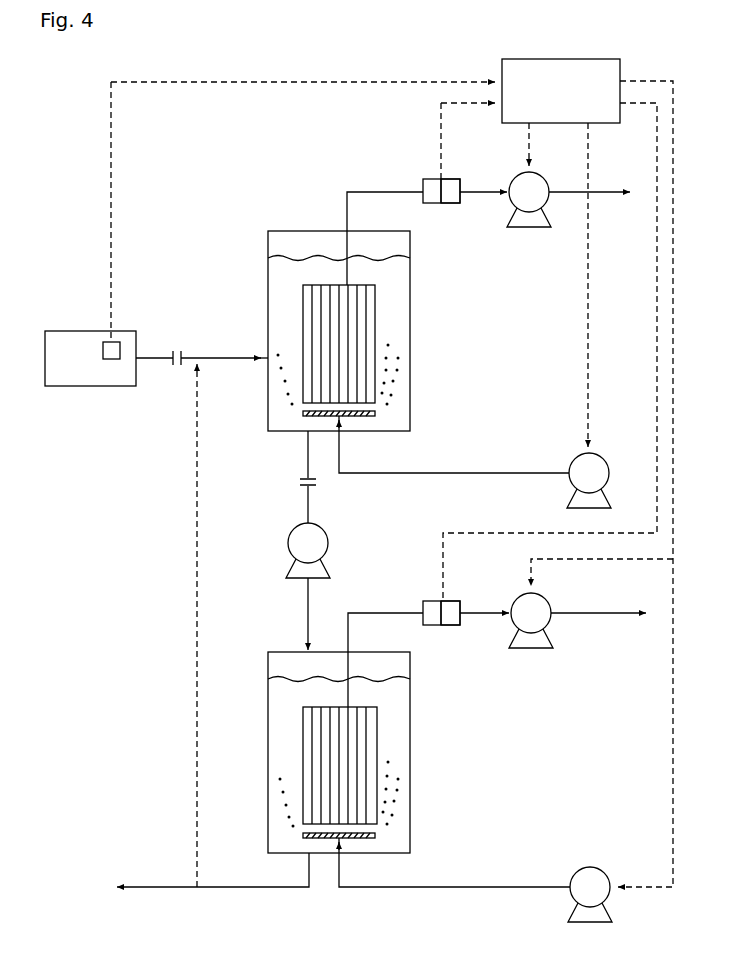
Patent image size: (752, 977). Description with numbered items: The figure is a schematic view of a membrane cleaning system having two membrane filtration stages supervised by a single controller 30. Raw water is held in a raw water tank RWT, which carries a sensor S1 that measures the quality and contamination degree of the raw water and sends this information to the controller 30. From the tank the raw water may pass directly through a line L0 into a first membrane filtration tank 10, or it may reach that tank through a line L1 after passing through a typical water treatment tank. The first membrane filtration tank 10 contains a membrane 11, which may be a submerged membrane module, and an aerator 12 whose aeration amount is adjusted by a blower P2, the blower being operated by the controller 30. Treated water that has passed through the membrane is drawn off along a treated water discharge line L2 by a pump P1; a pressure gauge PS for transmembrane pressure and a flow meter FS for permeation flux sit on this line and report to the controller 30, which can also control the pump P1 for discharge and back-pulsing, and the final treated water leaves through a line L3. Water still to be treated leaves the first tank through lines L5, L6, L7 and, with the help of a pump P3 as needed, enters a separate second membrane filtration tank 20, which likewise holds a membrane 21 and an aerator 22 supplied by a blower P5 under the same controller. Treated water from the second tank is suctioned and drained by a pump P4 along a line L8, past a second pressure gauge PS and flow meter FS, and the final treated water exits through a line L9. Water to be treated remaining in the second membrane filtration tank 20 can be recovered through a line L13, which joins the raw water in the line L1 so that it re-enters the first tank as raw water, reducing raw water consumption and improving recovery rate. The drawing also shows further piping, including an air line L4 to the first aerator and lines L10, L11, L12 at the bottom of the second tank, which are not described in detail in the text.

The controller 30 is at (604, 59).
The raw water tank RWT is at (90, 358).
The water level sensor S1 is at (103, 343).
The first membrane filtration tank 10 is at (410, 311).
The membrane 11 is at (303, 308).
The aerator 12 is at (375, 413).
The second membrane filtration tank 20 is at (410, 735).
The membrane 21 is at (303, 732).
The aerator 22 is at (375, 835).
The pressure gauge PS is at (431, 206).
The flow meter FS is at (451, 207).
The pump P1 is at (537, 228).
The blower P2 is at (606, 458).
The pump P3 is at (328, 543).
The pump P4 is at (538, 649).
The blower P5 is at (607, 873).
The line L0 is at (157, 355).
The line L1 is at (226, 355).
The treated water discharge line L2 is at (480, 188).
The line L3 is at (607, 188).
The air supply line L4 is at (404, 476).
The line L5 is at (305, 462).
The line L6 is at (305, 509).
The line L7 is at (305, 608).
The line L8 is at (483, 610).
The line L9 is at (600, 613).
The second air supply line L10 is at (405, 887).
The second drain line L11 is at (258, 887).
The discharge line L12 is at (160, 887).
The line L13 is at (195, 538).